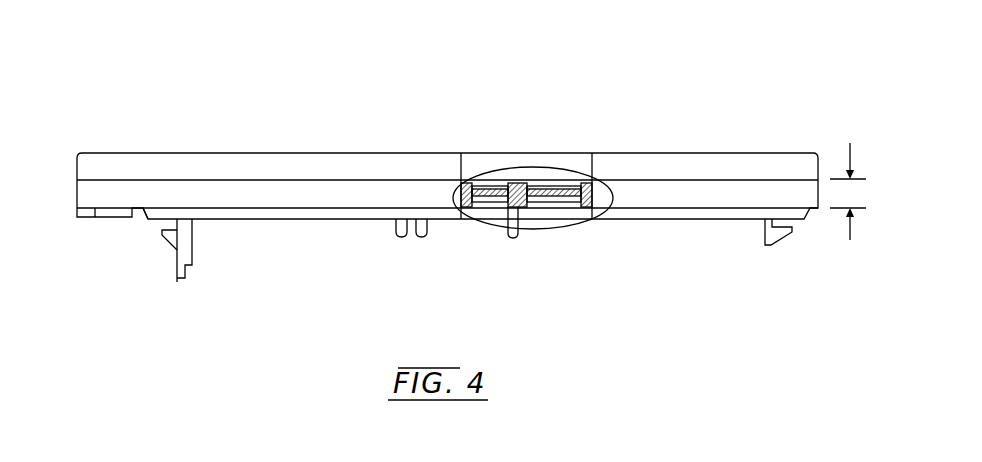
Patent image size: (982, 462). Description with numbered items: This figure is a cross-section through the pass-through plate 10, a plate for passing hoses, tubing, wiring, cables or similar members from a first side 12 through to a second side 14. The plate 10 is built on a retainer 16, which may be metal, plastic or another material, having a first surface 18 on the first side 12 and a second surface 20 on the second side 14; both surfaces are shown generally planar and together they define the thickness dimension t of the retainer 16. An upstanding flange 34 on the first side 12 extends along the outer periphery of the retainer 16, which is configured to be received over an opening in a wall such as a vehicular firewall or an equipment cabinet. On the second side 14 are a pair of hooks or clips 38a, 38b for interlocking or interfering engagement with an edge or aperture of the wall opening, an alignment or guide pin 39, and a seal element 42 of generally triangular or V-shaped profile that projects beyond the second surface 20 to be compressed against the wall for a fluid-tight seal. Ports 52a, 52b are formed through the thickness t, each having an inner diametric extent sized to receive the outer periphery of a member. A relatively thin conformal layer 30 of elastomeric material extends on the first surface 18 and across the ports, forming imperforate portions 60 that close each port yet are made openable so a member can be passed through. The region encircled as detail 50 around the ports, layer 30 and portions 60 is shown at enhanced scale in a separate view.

The pass-through plate 10 is at (718, 46).
The first side 12 is at (223, 136).
The second side 14 is at (308, 230).
The retainer 16 is at (77, 203).
The first surface 18 is at (548, 188).
The second surface 20 is at (540, 209).
The conformal layer 30 is at (516, 182).
The upstanding flange 34 is at (353, 152).
The hook or clip 38a is at (776, 246).
The hook or clip 38b is at (178, 280).
The alignment or guide pin 39 is at (511, 240).
The seal element 42 is at (147, 220).
The detail 50 is at (576, 226).
The port 52a is at (491, 164).
The port 52b is at (560, 161).
The imperforate portion 60 is at (570, 193).
The thickness dimension t is at (851, 158).